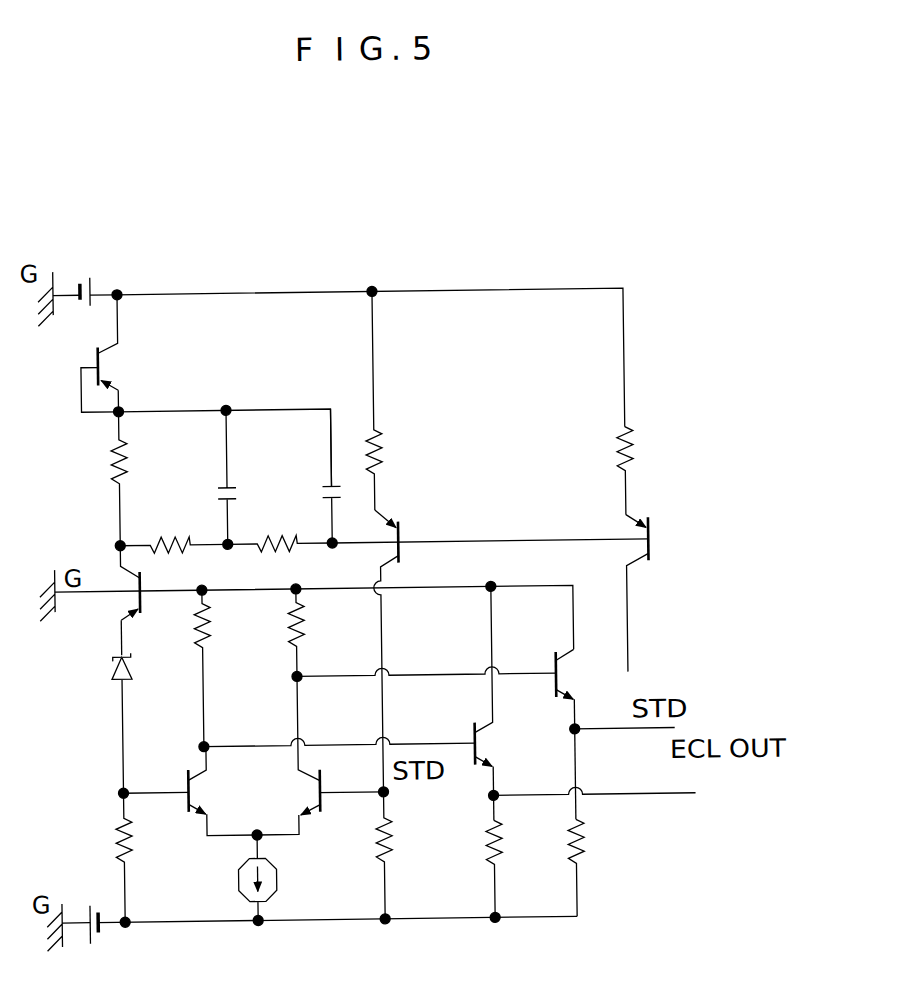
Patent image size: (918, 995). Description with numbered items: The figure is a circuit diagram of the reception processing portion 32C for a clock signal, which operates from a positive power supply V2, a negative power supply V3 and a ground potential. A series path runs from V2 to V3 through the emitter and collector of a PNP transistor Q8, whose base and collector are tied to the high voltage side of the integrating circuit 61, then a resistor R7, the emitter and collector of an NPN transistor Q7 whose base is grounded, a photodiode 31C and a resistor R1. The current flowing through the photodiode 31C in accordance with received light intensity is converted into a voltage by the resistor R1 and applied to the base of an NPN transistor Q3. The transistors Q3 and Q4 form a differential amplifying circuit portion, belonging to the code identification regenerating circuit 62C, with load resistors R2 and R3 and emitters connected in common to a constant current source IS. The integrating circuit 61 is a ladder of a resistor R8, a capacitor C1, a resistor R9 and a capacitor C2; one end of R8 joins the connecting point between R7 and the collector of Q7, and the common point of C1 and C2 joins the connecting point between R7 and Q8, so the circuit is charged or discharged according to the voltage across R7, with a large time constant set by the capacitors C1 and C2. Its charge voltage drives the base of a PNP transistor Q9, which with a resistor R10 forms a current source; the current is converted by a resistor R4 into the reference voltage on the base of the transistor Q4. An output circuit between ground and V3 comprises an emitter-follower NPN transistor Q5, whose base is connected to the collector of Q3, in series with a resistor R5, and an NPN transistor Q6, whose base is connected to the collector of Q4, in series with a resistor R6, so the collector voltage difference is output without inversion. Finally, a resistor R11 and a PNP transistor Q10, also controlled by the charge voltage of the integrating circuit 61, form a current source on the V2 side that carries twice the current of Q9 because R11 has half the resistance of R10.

The positive power supply V2 is at (104, 282).
The negative power supply V3 is at (117, 929).
The NPN transistor Q3 is at (190, 791).
The NPN transistor Q4 is at (319, 755).
The NPN transistor Q5 is at (498, 703).
The NPN transistor Q6 is at (579, 734).
The NPN transistor Q7 is at (150, 600).
The PNP transistor Q8 is at (115, 353).
The PNP transistor Q9 is at (410, 650).
The PNP transistor Q10 is at (665, 593).
The resistor R1 is at (104, 858).
The load resistor R2 is at (224, 668).
The load resistor R3 is at (314, 632).
The resistor R4 is at (404, 855).
The resistor R5 is at (513, 866).
The resistor R6 is at (596, 865).
The resistor R7 is at (137, 478).
The resistor R8 is at (174, 531).
The resistor R9 is at (279, 530).
The resistor R10 is at (400, 400).
The resistor R11 is at (647, 470).
The capacitor C1 is at (211, 477).
The capacitor C2 is at (310, 476).
The constant current source IS is at (269, 877).
The photodiode 31C is at (112, 658).
The reception processing portion for the clock signal 32C is at (686, 370).
The integrating circuit 61 is at (291, 450).
The code identification regenerating circuit 62C is at (267, 688).